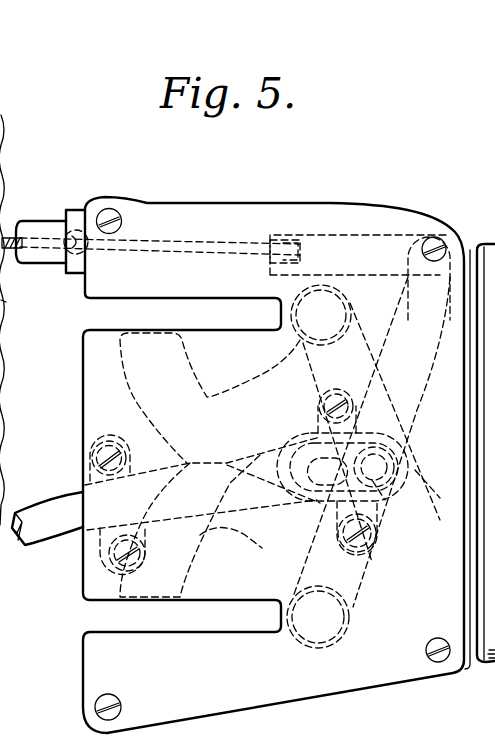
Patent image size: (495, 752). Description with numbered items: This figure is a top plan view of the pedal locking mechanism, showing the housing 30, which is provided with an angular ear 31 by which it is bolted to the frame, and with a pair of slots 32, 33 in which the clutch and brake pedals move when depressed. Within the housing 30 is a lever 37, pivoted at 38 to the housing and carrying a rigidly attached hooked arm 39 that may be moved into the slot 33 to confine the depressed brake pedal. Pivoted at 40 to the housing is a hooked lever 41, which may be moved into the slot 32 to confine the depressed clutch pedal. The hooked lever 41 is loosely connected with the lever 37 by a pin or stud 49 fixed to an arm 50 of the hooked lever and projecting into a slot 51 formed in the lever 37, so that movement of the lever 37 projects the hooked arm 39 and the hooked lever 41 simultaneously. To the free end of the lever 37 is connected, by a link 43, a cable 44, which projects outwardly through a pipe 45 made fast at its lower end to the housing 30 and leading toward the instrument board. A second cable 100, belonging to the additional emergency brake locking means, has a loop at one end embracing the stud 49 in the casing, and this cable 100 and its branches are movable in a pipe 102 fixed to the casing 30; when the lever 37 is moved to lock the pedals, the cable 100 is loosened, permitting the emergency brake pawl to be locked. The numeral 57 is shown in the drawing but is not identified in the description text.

The housing 30 is at (332, 216).
The angular ear 31 is at (1, 123).
The slot 32 is at (128, 320).
The slot 33 is at (140, 623).
The lever 37 is at (15, 303).
The pivot 38 is at (327, 617).
The hooked arm 39 is at (187, 527).
The pivot 40 is at (325, 318).
The hooked lever 41 is at (238, 398).
The link 43 is at (290, 234).
The cable 44 is at (17, 222).
The pipe 45 is at (37, 227).
The pin or stud 49 is at (393, 482).
The arm 50 is at (390, 432).
The slot 51 is at (382, 500).
The lever 57 is at (422, 382).
The cable 100 is at (18, 540).
The pipe 102 is at (45, 507).